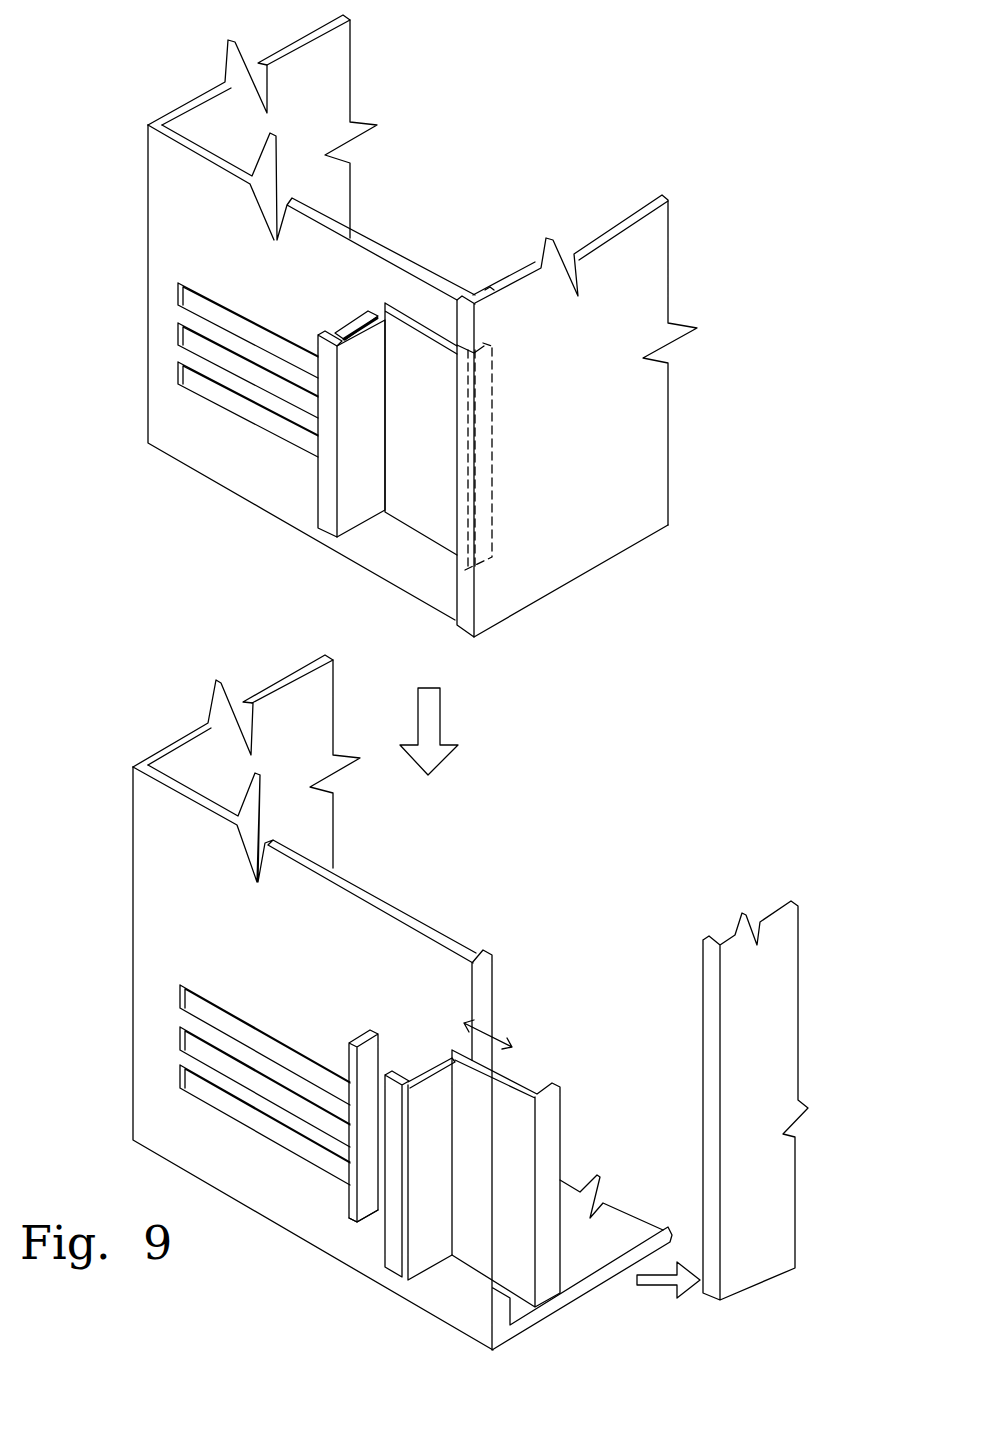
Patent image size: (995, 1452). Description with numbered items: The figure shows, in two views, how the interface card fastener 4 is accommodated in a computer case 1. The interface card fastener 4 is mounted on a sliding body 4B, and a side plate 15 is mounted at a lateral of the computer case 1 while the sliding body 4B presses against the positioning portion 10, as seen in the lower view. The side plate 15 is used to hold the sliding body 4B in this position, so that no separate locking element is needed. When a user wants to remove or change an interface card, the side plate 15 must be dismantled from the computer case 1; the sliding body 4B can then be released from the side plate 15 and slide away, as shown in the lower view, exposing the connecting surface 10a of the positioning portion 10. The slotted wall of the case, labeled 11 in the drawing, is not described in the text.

The computer case 1 is at (479, 112).
The slotted side wall 11 is at (165, 330).
The interface card fastener 4 is at (357, 500).
The sliding body 4B is at (432, 523).
The positioning portion 10 is at (353, 325).
The connecting surface 10a is at (363, 1197).
The side plate 15 is at (546, 472).